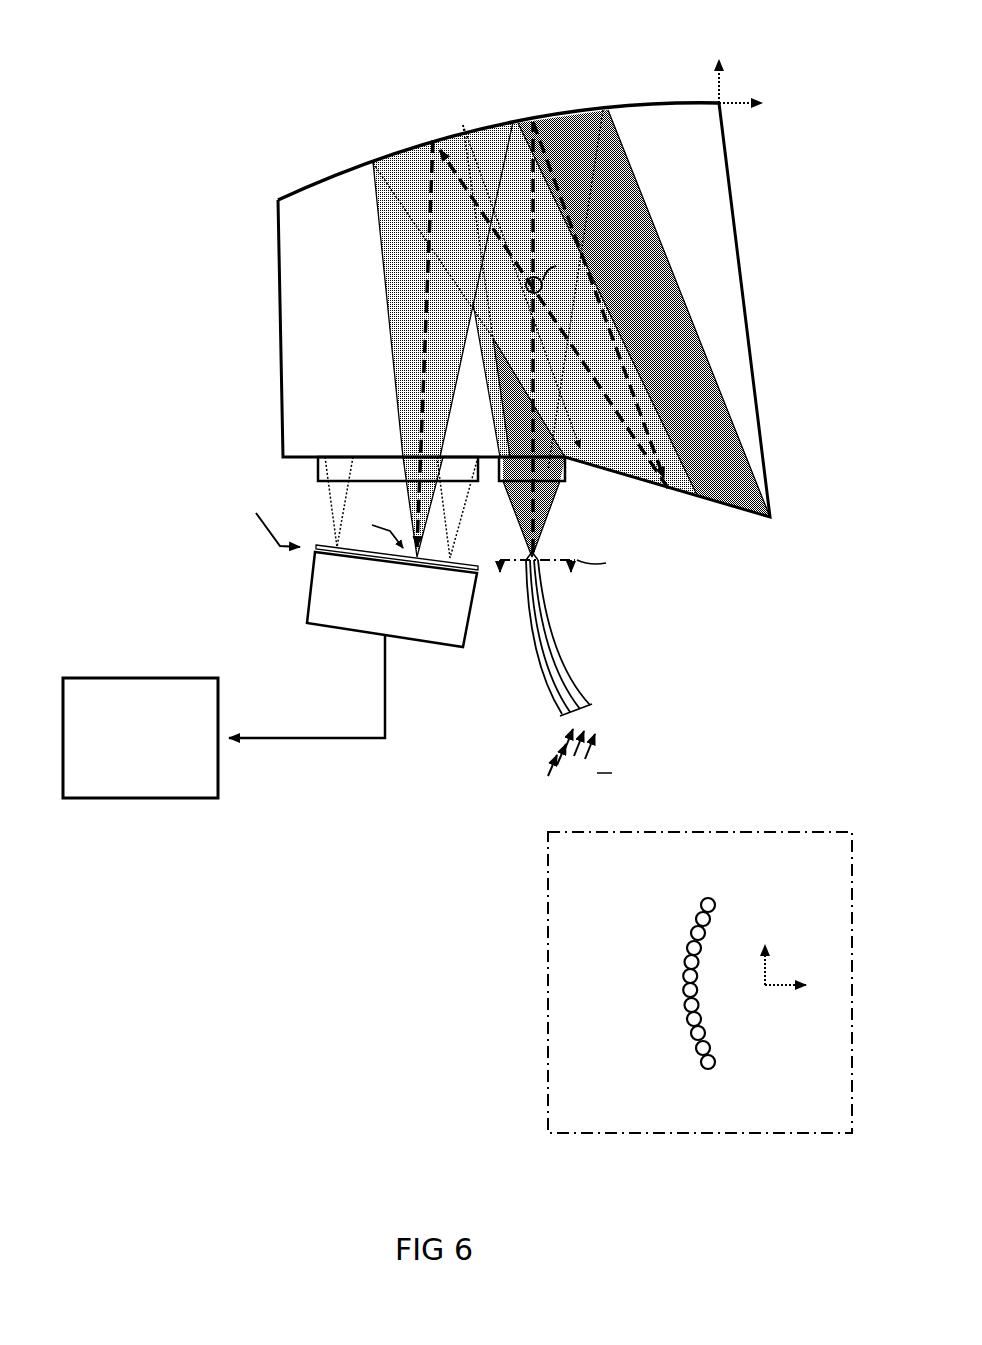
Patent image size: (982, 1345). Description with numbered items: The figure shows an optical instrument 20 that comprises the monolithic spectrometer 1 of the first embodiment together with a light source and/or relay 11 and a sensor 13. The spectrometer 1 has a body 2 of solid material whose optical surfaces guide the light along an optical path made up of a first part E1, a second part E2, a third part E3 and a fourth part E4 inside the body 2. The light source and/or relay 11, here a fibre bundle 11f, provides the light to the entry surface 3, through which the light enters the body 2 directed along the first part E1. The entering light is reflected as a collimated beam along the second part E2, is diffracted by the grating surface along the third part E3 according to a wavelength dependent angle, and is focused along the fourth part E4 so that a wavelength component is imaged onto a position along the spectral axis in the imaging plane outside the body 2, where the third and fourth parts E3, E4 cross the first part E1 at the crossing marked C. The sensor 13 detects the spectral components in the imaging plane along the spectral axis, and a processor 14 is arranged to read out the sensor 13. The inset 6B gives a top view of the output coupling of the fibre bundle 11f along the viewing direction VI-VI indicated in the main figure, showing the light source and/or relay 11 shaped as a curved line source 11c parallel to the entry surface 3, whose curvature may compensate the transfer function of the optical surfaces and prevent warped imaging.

The optical instrument 20 is at (86, 64).
The monolithic spectrometer 1 is at (288, 160).
The body 2 is at (666, 148).
The entry surface 3 is at (544, 500).
The light source and/or relay 11 is at (646, 637).
The fibre bundle 11f is at (560, 640).
The curved line source 11c is at (648, 977).
The sensor 13 is at (403, 612).
The processor 14 is at (153, 751).
The inset showing top view of fibre bundle output coupling 6B is at (504, 898).
The first part of the optical path E1 is at (550, 415).
The second part of the optical path E2 is at (630, 342).
The third part of the optical path E3 is at (498, 228).
The fourth part of the optical path E4 is at (437, 355).